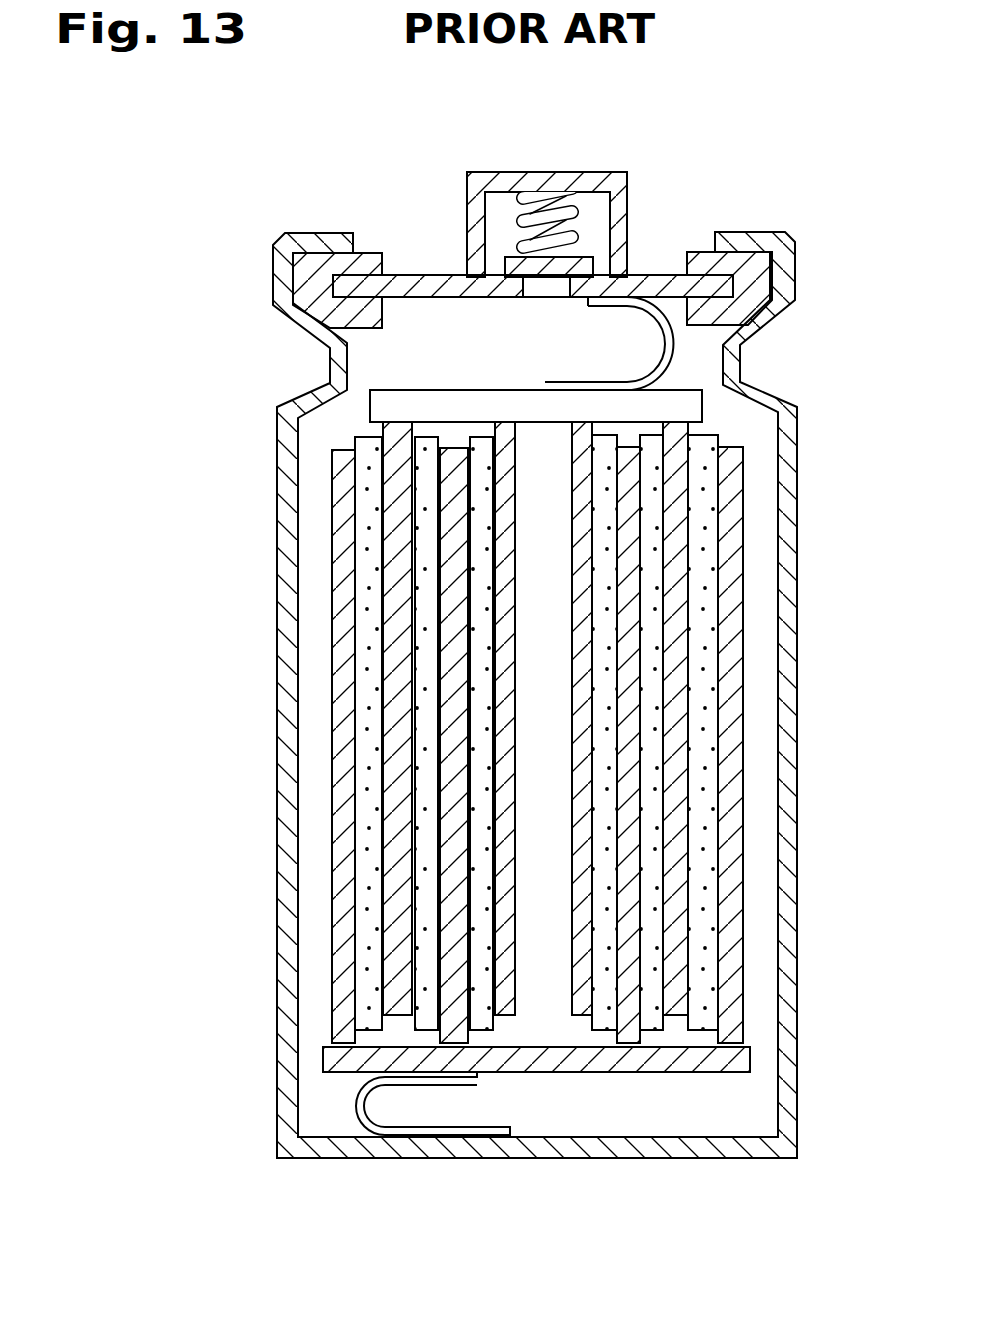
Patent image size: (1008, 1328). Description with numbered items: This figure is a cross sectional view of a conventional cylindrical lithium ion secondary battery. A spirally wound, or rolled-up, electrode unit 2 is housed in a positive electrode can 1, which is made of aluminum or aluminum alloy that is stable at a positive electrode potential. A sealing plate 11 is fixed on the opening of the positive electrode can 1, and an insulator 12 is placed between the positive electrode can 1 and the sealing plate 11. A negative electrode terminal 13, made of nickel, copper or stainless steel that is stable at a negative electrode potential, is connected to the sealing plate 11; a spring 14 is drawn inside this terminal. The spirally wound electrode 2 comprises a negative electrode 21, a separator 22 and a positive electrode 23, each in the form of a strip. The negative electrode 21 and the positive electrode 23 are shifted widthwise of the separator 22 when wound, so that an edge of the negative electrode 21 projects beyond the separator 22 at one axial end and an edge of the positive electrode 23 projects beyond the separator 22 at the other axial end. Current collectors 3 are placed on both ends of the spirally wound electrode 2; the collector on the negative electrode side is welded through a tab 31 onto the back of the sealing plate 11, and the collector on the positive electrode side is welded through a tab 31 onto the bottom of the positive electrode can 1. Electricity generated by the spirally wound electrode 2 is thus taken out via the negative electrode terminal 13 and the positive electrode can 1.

The positive electrode can 1 is at (797, 460).
The spirally wound electrode unit 2 is at (596, 732).
The current collector 3 is at (673, 388).
The sealing plate 11 is at (670, 282).
The insulator 12 is at (360, 258).
The negative electrode terminal 13 is at (507, 174).
The spring 14 is at (583, 252).
The negative electrode 21 is at (680, 790).
The separator 22 is at (705, 738).
The positive electrode 23 is at (735, 683).
The tab 31 is at (665, 356).